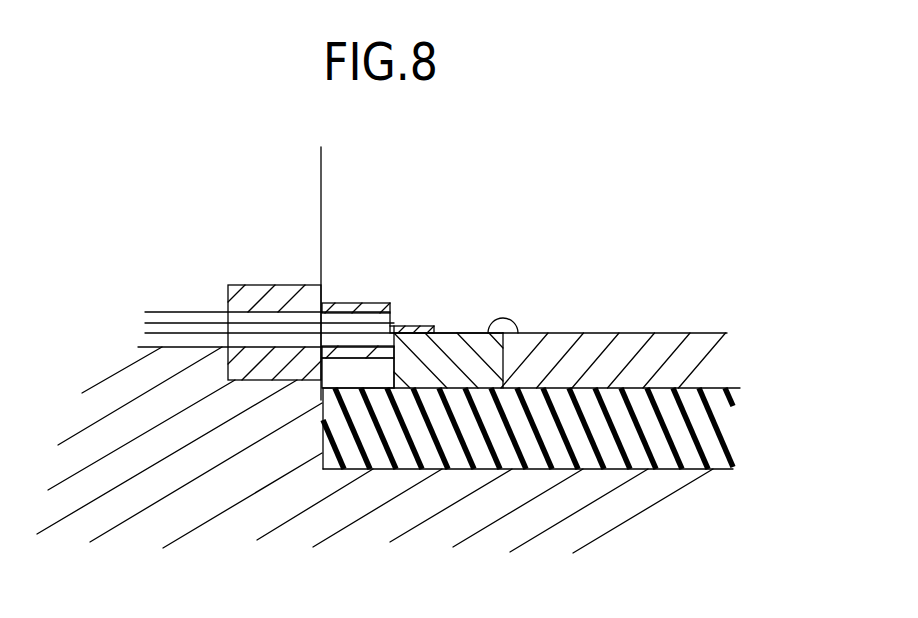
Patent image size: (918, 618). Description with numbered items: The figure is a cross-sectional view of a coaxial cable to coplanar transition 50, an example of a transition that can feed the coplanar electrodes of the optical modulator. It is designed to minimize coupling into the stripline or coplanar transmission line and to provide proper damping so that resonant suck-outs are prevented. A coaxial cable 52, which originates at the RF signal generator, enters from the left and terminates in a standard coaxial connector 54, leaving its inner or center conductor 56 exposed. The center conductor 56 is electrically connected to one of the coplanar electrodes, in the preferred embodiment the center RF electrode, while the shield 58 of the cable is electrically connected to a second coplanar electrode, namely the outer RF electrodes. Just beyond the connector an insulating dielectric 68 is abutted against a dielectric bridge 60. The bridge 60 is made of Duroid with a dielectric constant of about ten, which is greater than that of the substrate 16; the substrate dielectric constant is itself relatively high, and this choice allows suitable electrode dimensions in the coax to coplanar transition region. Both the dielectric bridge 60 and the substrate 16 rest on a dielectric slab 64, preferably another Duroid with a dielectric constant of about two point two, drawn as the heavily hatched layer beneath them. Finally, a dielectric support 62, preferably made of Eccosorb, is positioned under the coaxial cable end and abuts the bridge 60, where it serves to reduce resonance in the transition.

The coaxial cable to coplanar transition 50 is at (630, 196).
The coaxial cable 52 is at (170, 311).
The coaxial connector 54 is at (252, 285).
The center conductor 56 is at (454, 341).
The shield 58 is at (341, 303).
The dielectric bridge 60 is at (463, 335).
The dielectric support 62 is at (342, 377).
The dielectric slab 64 is at (680, 443).
The insulating dielectric 68 is at (390, 322).
The substrate 16 is at (697, 339).